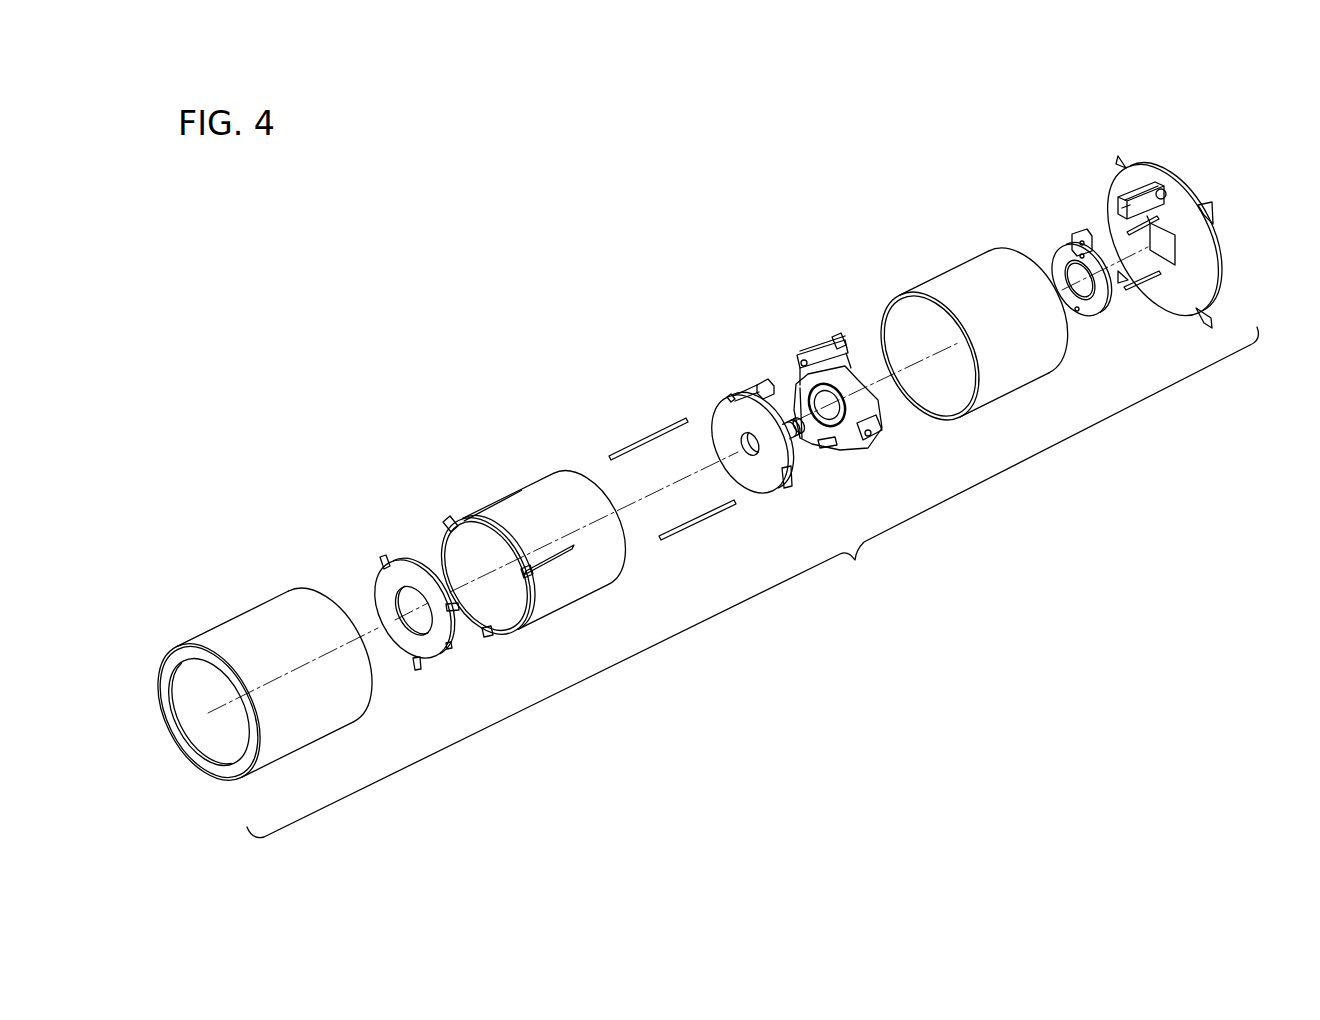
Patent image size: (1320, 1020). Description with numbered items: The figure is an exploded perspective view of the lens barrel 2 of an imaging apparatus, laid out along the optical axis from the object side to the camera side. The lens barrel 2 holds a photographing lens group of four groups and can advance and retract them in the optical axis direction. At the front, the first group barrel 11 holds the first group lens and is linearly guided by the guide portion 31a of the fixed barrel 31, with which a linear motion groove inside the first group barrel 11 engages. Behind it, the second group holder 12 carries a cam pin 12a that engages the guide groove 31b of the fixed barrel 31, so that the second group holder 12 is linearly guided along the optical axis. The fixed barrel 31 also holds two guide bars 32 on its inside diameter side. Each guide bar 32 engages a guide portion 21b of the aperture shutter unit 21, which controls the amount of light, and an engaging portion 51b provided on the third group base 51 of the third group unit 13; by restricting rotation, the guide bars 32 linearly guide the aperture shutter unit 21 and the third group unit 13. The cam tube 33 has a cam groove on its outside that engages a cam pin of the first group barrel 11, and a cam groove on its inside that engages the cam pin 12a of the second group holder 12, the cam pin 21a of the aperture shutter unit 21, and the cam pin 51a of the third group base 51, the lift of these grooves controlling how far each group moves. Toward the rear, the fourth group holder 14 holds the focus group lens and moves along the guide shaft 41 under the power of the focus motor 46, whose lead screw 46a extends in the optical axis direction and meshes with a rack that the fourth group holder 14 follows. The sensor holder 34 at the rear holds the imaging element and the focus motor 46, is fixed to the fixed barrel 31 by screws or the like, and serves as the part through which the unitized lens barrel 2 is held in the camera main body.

The lens barrel 2 is at (752, 582).
The first group barrel 11 is at (250, 615).
The second group holder 12 is at (427, 642).
The cam pin 12a is at (383, 558).
The fixed barrel 31 is at (575, 565).
The guide portion 31a is at (450, 520).
The guide groove 31b is at (547, 560).
The guide bar 32 is at (630, 443).
The aperture shutter unit 21 is at (762, 490).
The cam pin 21a is at (763, 377).
The guide portion 21b is at (728, 398).
The third group unit 13 is at (845, 445).
The third group base 51 is at (816, 358).
The cam pin 51a is at (833, 333).
The engaging portion 51b is at (805, 362).
The cam tube 33 is at (1027, 368).
The fourth group holder 14 is at (1093, 313).
The sensor holder 34 is at (1187, 248).
The guide shaft 41 is at (1148, 247).
The focus motor 46 is at (1158, 192).
The lead screw 46a is at (1130, 198).